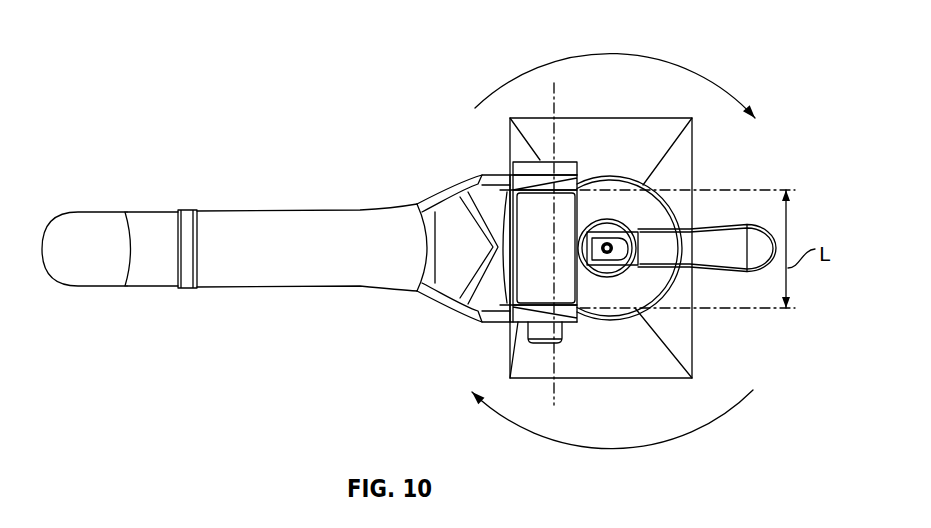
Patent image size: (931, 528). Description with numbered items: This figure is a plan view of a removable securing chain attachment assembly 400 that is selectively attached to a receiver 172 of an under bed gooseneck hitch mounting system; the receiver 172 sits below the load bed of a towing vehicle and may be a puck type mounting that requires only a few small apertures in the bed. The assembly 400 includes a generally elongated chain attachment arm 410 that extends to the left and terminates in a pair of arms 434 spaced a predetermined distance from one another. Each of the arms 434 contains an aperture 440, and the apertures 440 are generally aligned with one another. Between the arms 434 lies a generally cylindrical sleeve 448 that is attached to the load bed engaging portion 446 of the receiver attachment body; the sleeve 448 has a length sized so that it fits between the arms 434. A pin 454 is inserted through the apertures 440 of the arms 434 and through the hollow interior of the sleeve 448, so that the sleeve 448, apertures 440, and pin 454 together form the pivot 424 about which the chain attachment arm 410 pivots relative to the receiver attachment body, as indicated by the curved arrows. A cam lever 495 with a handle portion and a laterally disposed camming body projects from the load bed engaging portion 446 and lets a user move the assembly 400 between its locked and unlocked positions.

The removable securing chain attachment assembly 400 is at (340, 117).
The chain attachment arm 410 is at (263, 212).
The arms 434 is at (510, 178).
The apertures 440 is at (567, 325).
The sleeve 448 is at (565, 285).
The pin 454 is at (544, 333).
The pivot point 424 is at (557, 108).
The receiver 172 is at (683, 172).
The load bed engaging portion 446 is at (662, 290).
The cam lever 495 is at (767, 263).